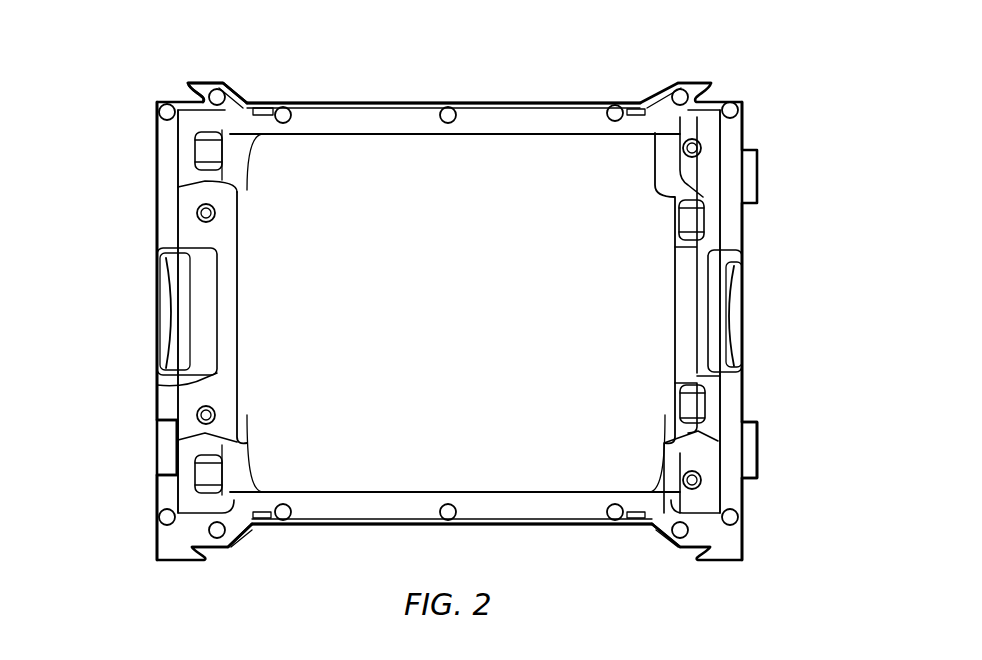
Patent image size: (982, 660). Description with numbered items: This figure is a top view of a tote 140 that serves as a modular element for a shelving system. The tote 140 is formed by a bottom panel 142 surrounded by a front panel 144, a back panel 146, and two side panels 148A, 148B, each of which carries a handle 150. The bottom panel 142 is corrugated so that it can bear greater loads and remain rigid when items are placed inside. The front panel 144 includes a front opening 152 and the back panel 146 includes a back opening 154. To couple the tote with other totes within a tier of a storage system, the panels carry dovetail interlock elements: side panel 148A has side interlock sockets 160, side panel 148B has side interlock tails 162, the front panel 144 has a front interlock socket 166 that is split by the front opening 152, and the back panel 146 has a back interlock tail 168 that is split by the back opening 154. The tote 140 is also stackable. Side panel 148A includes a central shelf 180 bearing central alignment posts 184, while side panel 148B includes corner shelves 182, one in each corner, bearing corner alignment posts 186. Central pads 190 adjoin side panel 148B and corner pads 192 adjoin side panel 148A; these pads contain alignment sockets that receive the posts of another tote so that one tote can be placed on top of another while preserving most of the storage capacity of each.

The tote 140 is at (122, 125).
The bottom panel 142 is at (468, 392).
The front panel 144 is at (588, 536).
The back panel 146 is at (210, 71).
The side panel 148A is at (158, 230).
The side panel 148B is at (745, 244).
The handle 150 is at (175, 348).
The front opening 152 is at (312, 557).
The back opening 154 is at (327, 96).
The side interlock socket 160 is at (162, 454).
The side interlock tail 162 is at (750, 458).
The front interlock socket 166 is at (690, 572).
The back interlock tail 168 is at (187, 82).
The central shelf 180 is at (185, 236).
The corner shelf 182 is at (706, 165).
The central alignment post 184 is at (197, 212).
The corner alignment post 186 is at (701, 147).
The central pad 190 is at (700, 217).
The corner pad 192 is at (203, 155).